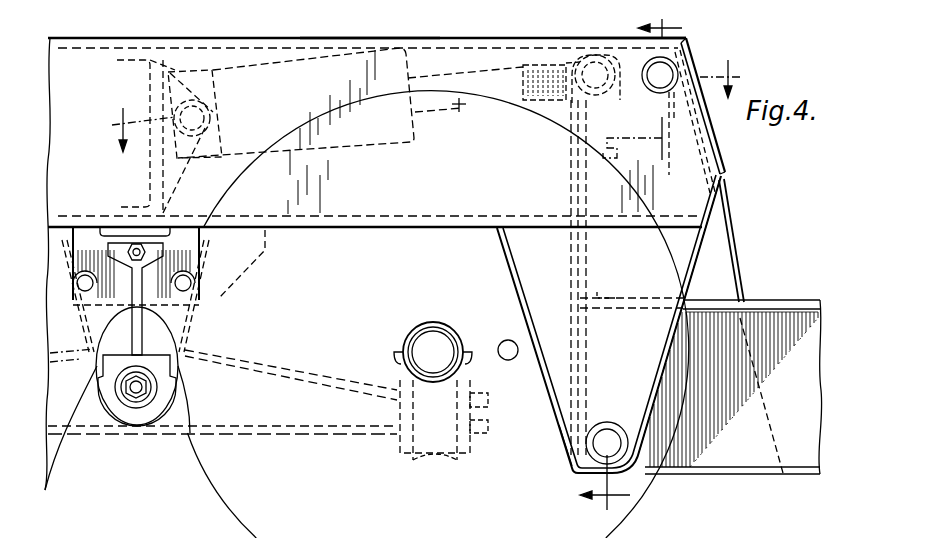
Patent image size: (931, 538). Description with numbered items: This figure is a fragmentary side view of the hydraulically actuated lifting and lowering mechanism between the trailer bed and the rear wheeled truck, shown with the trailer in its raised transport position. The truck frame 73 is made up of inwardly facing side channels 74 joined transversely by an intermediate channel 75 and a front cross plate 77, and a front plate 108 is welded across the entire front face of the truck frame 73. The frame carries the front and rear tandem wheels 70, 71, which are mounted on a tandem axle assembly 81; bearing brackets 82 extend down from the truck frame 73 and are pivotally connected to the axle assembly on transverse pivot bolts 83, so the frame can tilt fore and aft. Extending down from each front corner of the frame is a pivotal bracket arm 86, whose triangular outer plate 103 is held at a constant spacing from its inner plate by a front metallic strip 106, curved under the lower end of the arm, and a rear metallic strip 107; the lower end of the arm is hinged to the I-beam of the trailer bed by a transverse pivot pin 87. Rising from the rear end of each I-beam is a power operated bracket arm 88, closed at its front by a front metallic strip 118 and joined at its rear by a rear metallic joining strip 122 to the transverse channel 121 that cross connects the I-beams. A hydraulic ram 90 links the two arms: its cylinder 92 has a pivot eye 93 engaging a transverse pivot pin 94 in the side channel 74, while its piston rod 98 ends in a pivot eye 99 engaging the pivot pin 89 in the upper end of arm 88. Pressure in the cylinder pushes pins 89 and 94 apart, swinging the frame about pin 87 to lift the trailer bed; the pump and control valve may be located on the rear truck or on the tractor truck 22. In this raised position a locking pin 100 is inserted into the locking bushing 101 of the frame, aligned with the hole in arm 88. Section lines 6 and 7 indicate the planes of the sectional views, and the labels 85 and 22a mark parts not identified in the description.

The side channel 74 is at (75, 38).
The truck frame 73 is at (300, 40).
The front cross plate 77 is at (614, 37).
The end plate 85 is at (699, 47).
The front plate 108 is at (723, 163).
The section line 6- 6 is at (425, 106).
The section line 7- 7 is at (638, 271).
The intermediate channel 75 is at (147, 80).
The pivot eye 93 is at (199, 76).
The transverse pivot pin 94 is at (210, 112).
The cylinder 92 is at (257, 160).
The hydraulic ram 90 is at (378, 146).
The piston rod 98 is at (459, 106).
The pivot eye 99 is at (543, 103).
The pivot pin 89 is at (592, 100).
The rear metallic joining strip 122 is at (603, 155).
The locking pin 100 is at (656, 86).
The locking bushing 101 is at (678, 133).
The pivotal bracket arm 86 is at (533, 277).
The rear metallic strip 107 is at (560, 420).
The power operated bracket arm 88 is at (714, 254).
The transverse pivot pin 87 is at (600, 448).
The front metallic strip 118 is at (736, 270).
The tractor truck 22 is at (804, 303).
The rail flange 22a is at (666, 300).
The transverse channel 121 is at (598, 291).
The outer plate 103 is at (650, 357).
The front metallic strip 106 is at (660, 398).
The front wheel 70 is at (242, 499).
The rear wheel 71 is at (55, 483).
The tandem axle assembly 81 is at (93, 436).
The bearing bracket 82 is at (110, 369).
The transverse pivot bolt 83 is at (138, 396).